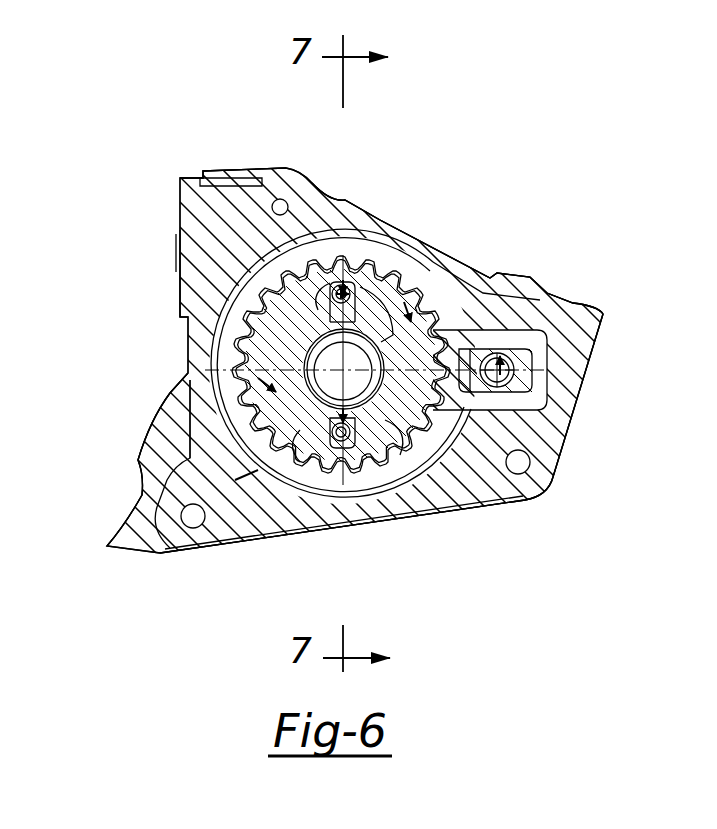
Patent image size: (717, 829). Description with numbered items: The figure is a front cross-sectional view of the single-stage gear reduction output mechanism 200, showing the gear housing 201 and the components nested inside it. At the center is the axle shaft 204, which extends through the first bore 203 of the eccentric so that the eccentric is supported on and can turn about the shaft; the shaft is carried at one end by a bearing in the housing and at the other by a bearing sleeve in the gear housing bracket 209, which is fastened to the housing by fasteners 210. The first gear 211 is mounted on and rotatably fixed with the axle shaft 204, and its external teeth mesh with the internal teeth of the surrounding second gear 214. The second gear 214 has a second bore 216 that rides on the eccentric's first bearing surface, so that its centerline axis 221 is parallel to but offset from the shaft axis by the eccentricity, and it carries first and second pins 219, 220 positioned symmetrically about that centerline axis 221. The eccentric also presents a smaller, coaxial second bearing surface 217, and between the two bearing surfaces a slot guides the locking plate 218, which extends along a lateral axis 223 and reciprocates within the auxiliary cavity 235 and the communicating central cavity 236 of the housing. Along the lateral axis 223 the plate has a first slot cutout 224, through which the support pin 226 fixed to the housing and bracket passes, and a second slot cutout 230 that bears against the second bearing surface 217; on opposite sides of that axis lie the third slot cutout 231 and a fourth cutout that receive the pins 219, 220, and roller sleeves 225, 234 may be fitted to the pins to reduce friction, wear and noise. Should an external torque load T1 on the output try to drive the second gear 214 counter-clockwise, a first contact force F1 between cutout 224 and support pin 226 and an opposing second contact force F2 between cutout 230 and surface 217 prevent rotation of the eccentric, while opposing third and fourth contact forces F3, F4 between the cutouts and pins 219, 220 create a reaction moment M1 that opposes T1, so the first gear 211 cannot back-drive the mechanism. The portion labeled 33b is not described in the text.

The single-stage gear reduction output mechanism 200 is at (592, 94).
The gear housing 201 is at (184, 252).
The first bore 203 is at (180, 270).
The axle shaft 204 is at (384, 392).
The gear housing bracket 209 is at (222, 176).
The fasteners 210 is at (284, 198).
The housing portion 33b is at (308, 337).
The first gear 211 is at (240, 360).
The second gear 214 is at (230, 395).
The second bore 216 is at (230, 330).
The second bearing surface 217 is at (222, 305).
The locking plate 218 is at (420, 266).
The first pin 219 is at (341, 284).
The second pin 220 is at (346, 442).
The centerline axis 221 is at (390, 300).
The lateral axis 223 is at (548, 404).
The first slot cutout 224 is at (532, 366).
The roller sleeve 225 is at (472, 402).
The support pin 226 is at (480, 402).
The second slot cutout 230 is at (232, 405).
The third slot cutout 231 is at (347, 290).
The roller sleeve 234 is at (300, 452).
The auxiliary cavity 235 is at (542, 332).
The central cavity 236 is at (443, 328).
The first contact force F1 is at (502, 356).
The second contact force F2 is at (388, 412).
The third contact force F3 is at (352, 305).
The fourth contact force F4 is at (233, 478).
The external torque load T1 is at (406, 300).
The reaction moment M1 is at (205, 389).